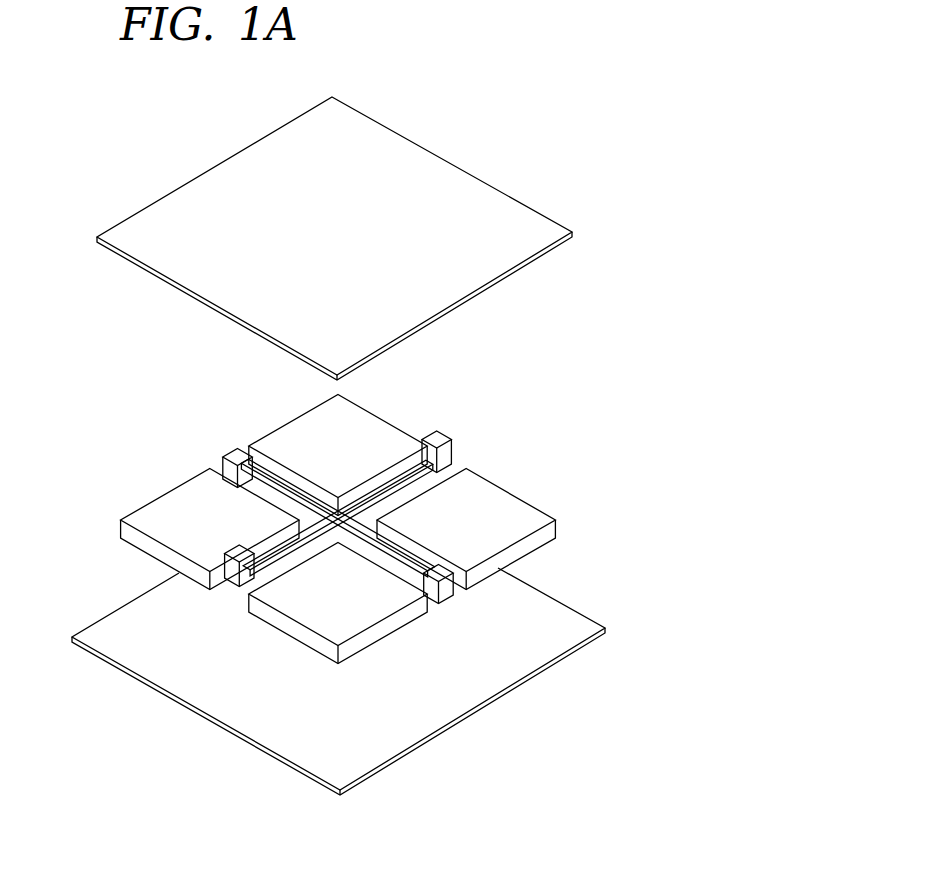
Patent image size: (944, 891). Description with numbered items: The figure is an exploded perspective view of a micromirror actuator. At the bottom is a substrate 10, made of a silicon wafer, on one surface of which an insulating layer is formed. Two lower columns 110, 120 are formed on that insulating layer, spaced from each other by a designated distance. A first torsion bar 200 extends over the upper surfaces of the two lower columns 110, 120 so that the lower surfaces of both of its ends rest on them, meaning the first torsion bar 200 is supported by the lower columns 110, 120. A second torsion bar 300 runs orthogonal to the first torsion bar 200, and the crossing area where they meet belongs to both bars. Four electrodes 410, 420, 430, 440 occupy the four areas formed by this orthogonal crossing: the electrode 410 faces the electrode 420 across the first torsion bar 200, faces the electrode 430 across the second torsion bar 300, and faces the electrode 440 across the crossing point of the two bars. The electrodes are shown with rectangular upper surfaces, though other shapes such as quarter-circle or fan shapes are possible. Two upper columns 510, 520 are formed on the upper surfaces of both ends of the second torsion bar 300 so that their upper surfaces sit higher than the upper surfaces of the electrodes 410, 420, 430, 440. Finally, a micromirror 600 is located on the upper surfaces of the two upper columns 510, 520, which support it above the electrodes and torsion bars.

The substrate 10 is at (235, 718).
The lower column 110 is at (447, 590).
The lower column 120 is at (223, 463).
The first torsion bar 200 is at (410, 567).
The second torsion bar 300 is at (277, 560).
The electrode 410 is at (353, 647).
The electrode 420 is at (512, 505).
The electrode 430 is at (148, 518).
The electrode 440 is at (288, 430).
The upper column 510 is at (232, 575).
The upper column 520 is at (458, 445).
The micromirror 600 is at (478, 190).